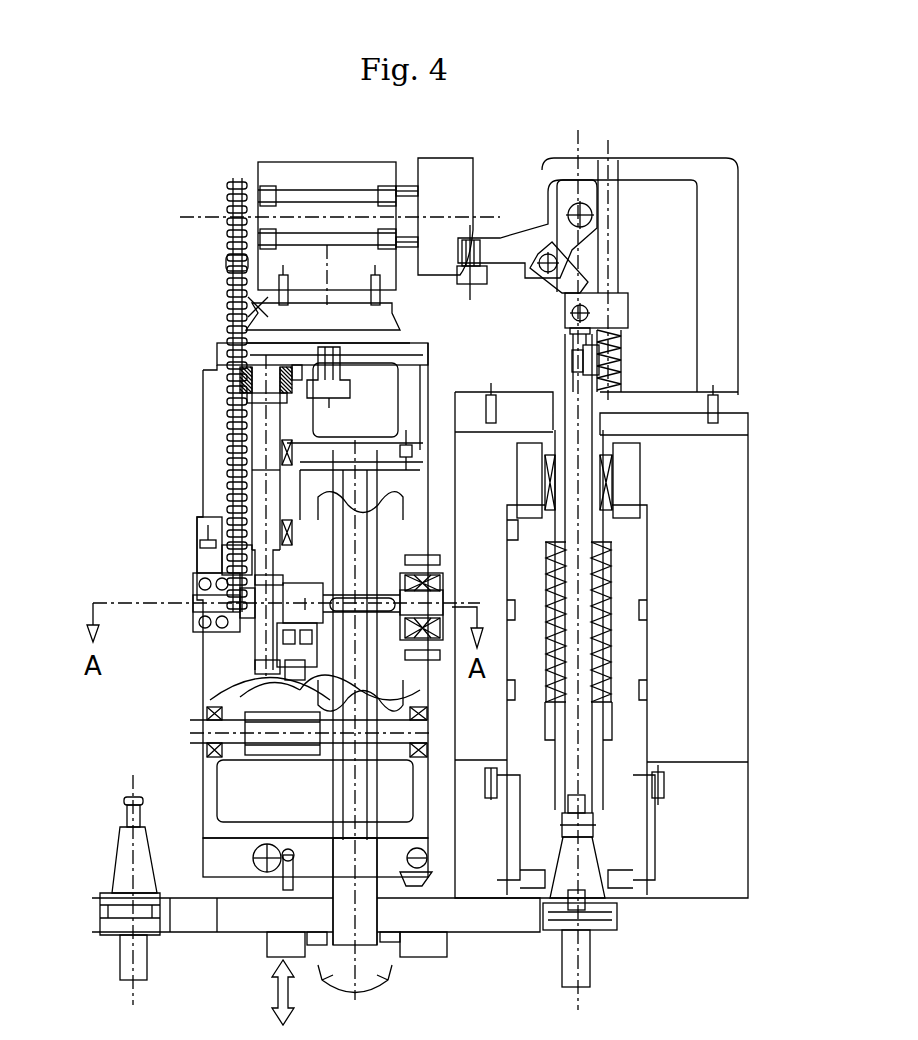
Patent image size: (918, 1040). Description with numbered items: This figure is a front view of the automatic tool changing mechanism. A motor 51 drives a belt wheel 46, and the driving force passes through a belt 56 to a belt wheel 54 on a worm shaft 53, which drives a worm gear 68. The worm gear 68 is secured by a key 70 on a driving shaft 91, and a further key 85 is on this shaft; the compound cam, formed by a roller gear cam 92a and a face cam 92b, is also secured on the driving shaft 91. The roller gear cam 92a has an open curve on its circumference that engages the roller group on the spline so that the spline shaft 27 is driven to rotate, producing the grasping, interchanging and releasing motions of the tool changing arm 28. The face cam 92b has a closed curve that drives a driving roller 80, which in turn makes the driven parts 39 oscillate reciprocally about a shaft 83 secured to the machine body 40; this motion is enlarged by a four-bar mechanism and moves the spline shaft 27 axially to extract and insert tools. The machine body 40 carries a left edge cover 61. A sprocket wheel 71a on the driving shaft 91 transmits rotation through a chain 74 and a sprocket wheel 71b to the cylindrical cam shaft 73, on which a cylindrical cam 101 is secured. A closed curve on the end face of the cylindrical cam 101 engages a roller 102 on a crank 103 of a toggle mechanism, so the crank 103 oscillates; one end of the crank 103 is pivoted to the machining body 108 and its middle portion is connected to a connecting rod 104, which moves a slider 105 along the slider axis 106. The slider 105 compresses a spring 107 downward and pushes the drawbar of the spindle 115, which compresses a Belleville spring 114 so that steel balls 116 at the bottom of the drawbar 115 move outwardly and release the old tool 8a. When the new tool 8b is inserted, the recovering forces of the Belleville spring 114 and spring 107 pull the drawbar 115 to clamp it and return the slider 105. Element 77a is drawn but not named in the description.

The sprocket wheel 71b is at (228, 183).
The cylindrical cam shaft 73 is at (317, 218).
The chain 74 is at (228, 263).
The motor 51 is at (228, 293).
The belt wheel 54 is at (245, 375).
The belt 56 is at (293, 390).
The belt wheel 46 is at (350, 370).
The worm shaft 53 is at (262, 462).
The left edge cover of the machine body 61 is at (210, 555).
The key 70 is at (212, 617).
The sprocket wheel 71a is at (215, 640).
The worm gear 68 is at (275, 655).
The driving roller 80 is at (298, 705).
The driven parts 39 is at (245, 718).
The shaft 83 is at (230, 735).
The machine body 40 is at (210, 813).
The bolt 77a is at (252, 885).
The new tool 8b is at (132, 933).
The tool changing arm 28 is at (242, 922).
The spline shaft 27 is at (367, 917).
The old tool 8a is at (583, 943).
The steel ball 116 is at (592, 813).
The Belleville spring 114 is at (633, 640).
The drawbar of spindle 115 is at (587, 527).
The roller gear cam 92a is at (347, 507).
The face cam 92b is at (355, 705).
The key 85 is at (383, 597).
The driving shaft 91 is at (415, 602).
The cylindrical cam 101 is at (455, 167).
The roller 102 is at (477, 277).
The crank 103 is at (512, 247).
The connecting rod 104 is at (562, 290).
The slider 105 is at (600, 312).
The slider axis 106 is at (615, 203).
The spring 107 is at (612, 364).
The machining body 108 is at (705, 168).